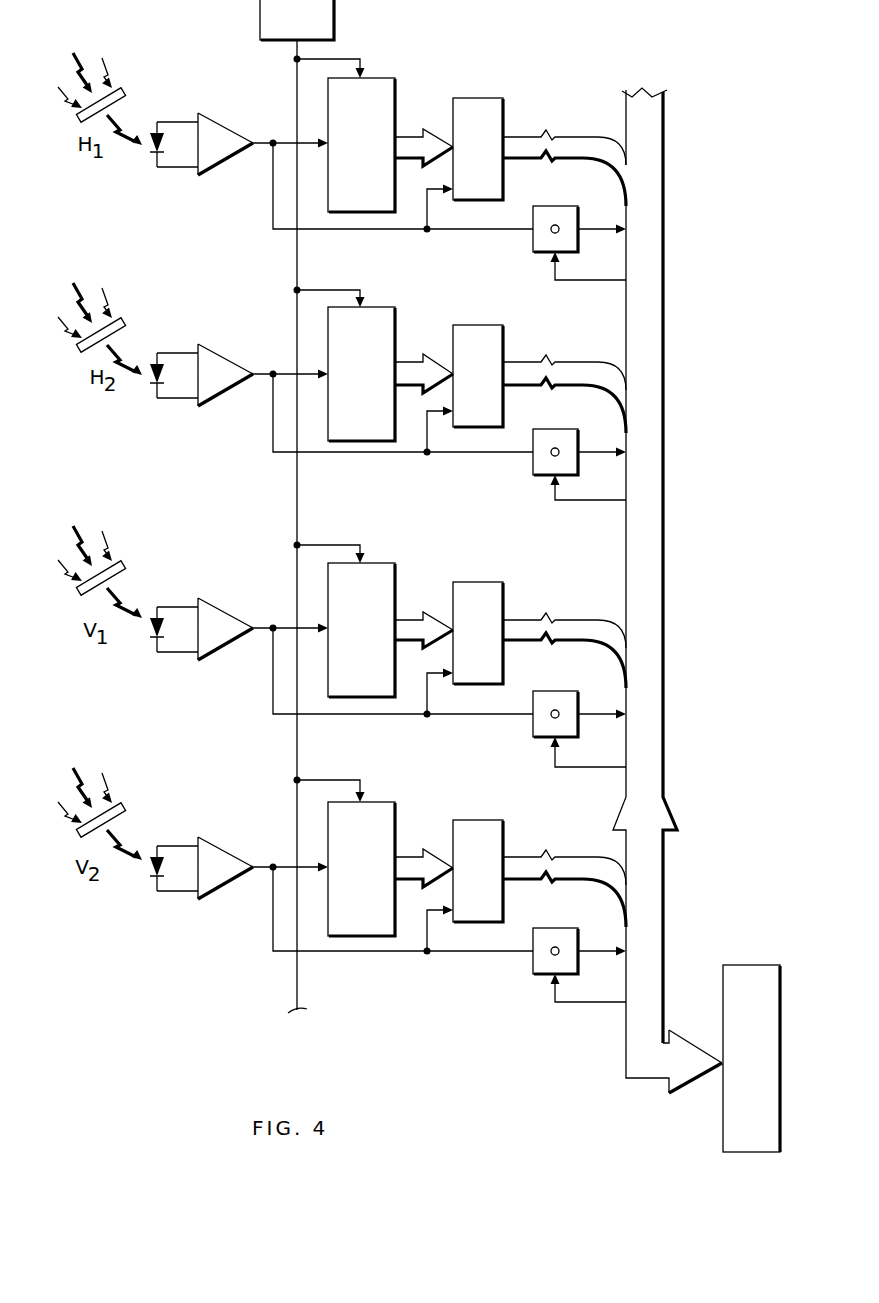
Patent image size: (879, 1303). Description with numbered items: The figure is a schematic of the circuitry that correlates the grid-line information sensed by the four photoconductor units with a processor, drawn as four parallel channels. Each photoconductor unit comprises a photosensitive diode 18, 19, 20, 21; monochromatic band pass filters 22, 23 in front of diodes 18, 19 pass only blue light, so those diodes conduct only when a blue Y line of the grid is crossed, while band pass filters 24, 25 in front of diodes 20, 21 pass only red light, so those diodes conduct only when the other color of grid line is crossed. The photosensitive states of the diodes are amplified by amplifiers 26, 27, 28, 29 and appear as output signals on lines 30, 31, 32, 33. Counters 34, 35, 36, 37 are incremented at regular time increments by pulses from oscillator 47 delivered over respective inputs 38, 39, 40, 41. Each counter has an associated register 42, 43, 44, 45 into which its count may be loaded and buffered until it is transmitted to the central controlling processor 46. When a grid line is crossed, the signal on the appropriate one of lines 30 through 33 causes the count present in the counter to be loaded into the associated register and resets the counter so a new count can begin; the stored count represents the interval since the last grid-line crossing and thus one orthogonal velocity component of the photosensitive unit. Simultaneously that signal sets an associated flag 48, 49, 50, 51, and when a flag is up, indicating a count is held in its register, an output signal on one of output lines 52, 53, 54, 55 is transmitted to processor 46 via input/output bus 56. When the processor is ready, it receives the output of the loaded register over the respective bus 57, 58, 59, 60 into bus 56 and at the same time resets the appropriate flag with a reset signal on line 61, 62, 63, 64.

The photosensitive diode 18 is at (160, 131).
The photosensitive diode 19 is at (160, 362).
The photosensitive diode 20 is at (160, 614).
The photosensitive diode 21 is at (160, 853).
The monochromatic band pass filter 22 is at (125, 92).
The monochromatic band pass filter 23 is at (125, 321).
The band pass filter 24 is at (125, 565).
The band pass filter 25 is at (125, 808).
The amplifier 26 is at (222, 127).
The amplifier 27 is at (222, 356).
The amplifier 28 is at (222, 612).
The amplifier 29 is at (222, 852).
The output line 30 is at (258, 142).
The output line 31 is at (258, 373).
The output line 32 is at (258, 627).
The output line 33 is at (258, 867).
The counter 34 is at (393, 80).
The counter 35 is at (393, 311).
The counter 36 is at (393, 566).
The counter 37 is at (393, 805).
The input 38 is at (352, 62).
The input 39 is at (352, 290).
The input 40 is at (350, 545).
The input 41 is at (350, 781).
The register 42 is at (500, 100).
The register 43 is at (500, 329).
The register 44 is at (500, 586).
The register 45 is at (500, 822).
The processor 46 is at (737, 980).
The oscillator 47 is at (334, 22).
The flag 48 is at (547, 214).
The flag 49 is at (548, 437).
The flag 50 is at (555, 700).
The flag 51 is at (548, 935).
The output line 52 is at (590, 228).
The output line 53 is at (590, 451).
The output line 54 is at (594, 713).
The output line 55 is at (598, 950).
The input/output bus 56 is at (645, 490).
The bus 57 is at (566, 144).
The bus 58 is at (580, 370).
The bus 59 is at (585, 630).
The bus 60 is at (572, 862).
The reset line 61 is at (575, 284).
The reset line 62 is at (560, 504).
The reset line 63 is at (590, 768).
The reset line 64 is at (598, 1002).